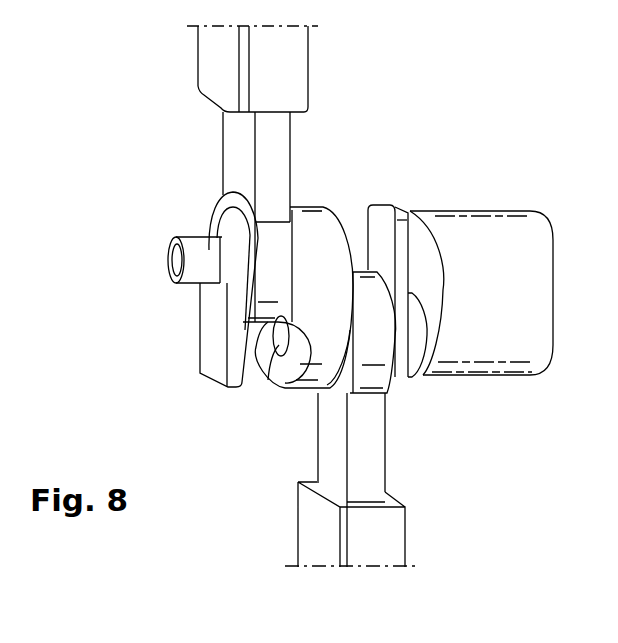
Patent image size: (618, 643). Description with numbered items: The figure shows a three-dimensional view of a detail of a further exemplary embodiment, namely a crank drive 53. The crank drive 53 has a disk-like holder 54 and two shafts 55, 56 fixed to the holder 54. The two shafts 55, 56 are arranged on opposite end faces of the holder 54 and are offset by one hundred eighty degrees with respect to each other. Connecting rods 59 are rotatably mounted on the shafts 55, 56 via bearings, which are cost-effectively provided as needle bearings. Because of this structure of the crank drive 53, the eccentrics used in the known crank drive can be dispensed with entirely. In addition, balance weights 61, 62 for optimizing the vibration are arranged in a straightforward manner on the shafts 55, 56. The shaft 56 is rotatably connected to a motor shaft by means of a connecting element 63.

The crank drive 53 is at (291, 413).
The disk-like holder 54 is at (313, 227).
The shaft 55 is at (197, 245).
The shaft 56 is at (268, 382).
The connecting rod 59 is at (238, 137).
The balance weight 61 is at (212, 341).
The balance weight 62 is at (378, 240).
The connecting element 63 is at (476, 240).